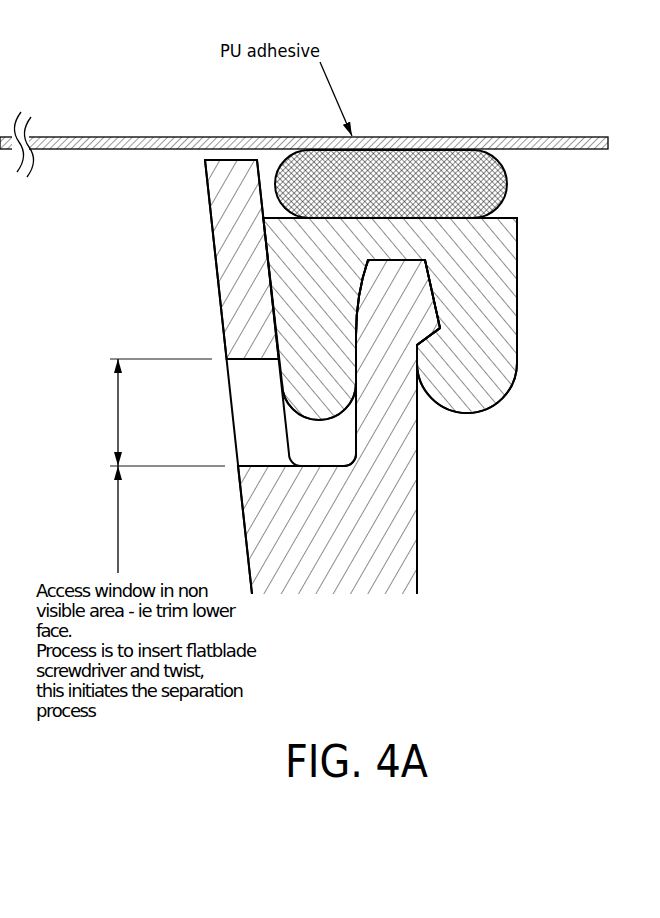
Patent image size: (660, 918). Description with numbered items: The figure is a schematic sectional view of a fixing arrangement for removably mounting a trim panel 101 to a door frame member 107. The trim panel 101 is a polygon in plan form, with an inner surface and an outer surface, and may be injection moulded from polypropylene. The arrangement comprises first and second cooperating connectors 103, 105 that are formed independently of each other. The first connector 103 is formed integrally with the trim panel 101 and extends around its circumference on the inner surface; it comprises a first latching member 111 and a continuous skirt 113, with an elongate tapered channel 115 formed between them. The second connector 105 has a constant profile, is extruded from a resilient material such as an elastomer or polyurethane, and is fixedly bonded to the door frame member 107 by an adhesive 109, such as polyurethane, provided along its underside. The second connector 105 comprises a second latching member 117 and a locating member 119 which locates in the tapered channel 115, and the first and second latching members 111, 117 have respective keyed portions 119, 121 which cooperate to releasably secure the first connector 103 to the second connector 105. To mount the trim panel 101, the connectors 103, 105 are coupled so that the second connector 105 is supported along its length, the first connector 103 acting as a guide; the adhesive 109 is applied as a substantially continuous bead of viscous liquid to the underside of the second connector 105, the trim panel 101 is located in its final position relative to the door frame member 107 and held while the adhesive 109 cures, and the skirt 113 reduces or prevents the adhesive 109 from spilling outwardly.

The trim panel 101 is at (395, 543).
The first connector 103 is at (438, 465).
The second connector 105 is at (530, 382).
The door frame member 107 is at (542, 138).
The adhesive 109 is at (493, 186).
The first latching member 111 is at (410, 327).
The continuous skirt 113 is at (265, 327).
The elongate tapered channel 115 is at (302, 441).
The second latching member 117 is at (478, 365).
The locating member 119 is at (335, 387).
The second keyed portion 121 is at (426, 350).